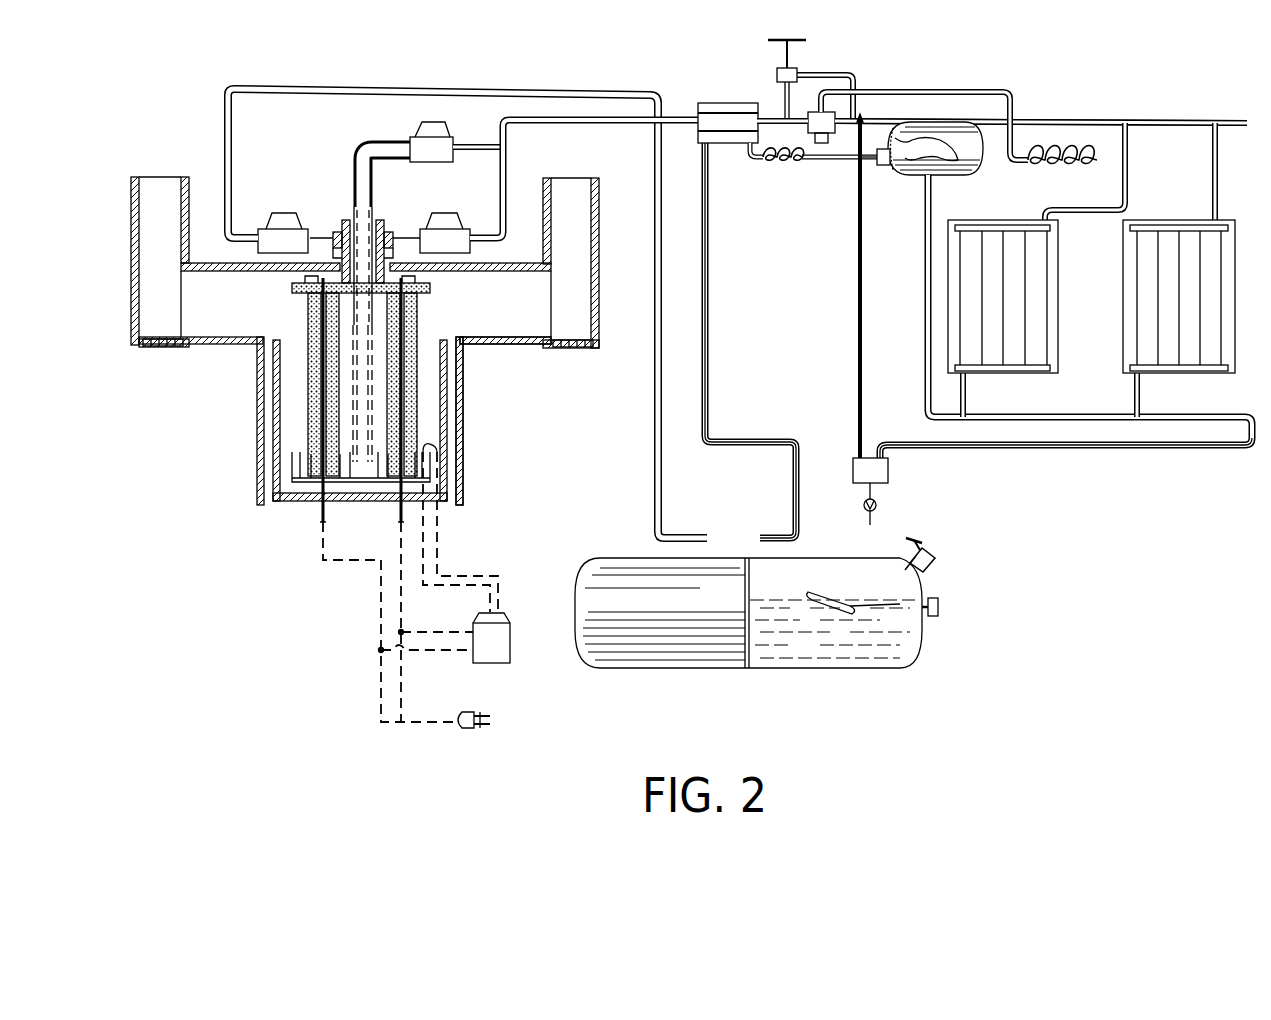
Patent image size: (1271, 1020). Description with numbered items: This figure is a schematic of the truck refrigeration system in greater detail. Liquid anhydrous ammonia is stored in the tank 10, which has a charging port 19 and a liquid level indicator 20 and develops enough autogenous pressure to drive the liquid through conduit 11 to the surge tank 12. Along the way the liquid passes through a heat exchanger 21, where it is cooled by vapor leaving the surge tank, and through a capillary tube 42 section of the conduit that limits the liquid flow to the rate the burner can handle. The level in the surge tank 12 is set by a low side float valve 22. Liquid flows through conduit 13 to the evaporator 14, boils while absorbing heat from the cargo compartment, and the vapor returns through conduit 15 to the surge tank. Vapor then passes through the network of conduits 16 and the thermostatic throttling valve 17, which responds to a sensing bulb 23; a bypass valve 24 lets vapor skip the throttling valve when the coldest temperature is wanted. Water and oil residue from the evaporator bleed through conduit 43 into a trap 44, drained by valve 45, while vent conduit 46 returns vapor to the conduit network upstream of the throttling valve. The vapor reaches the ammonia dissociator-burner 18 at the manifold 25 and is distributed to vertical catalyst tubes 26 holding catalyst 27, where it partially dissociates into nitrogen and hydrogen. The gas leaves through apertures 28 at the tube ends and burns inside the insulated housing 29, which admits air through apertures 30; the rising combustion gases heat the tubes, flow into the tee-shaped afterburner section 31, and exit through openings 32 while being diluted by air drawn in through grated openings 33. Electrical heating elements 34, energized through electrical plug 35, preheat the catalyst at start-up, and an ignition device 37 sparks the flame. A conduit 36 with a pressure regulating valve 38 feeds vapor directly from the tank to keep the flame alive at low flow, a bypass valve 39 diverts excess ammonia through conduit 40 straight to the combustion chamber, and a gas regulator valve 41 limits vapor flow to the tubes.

The tank 10 is at (775, 667).
The conduit 11 is at (793, 492).
The surge tank 12 is at (942, 132).
The conduit 13 is at (927, 272).
The evaporator 14 is at (1120, 306).
The conduit 15 is at (1160, 120).
The network of conduits 16 is at (678, 115).
The thermostatic throttling valve 17 is at (817, 110).
The ammonia dissociator-burner 18 is at (245, 492).
The charging port 19 is at (938, 565).
The liquid level indicator 20 is at (942, 612).
The heat exchanger 21 is at (727, 102).
The low side float valve 22 is at (886, 166).
The sensing bulb 23 is at (1056, 146).
The bypass valve 24 is at (784, 44).
The manifold 25 is at (293, 289).
The conduits (catalyst tubes) 26 is at (308, 319).
The catalyst 27 is at (418, 314).
The apertures 28 is at (300, 460).
The insulated housing 29 is at (462, 386).
The apertures 30 is at (275, 365).
The afterburner section 31 is at (490, 341).
The openings 32 is at (160, 183).
The grated openings 33 is at (150, 348).
The electrical heating elements 34 is at (399, 513).
The electrical plug 35 is at (496, 726).
The conduit 36 is at (231, 145).
The ignition device 37 is at (505, 662).
The pressure regulating valve 38 is at (287, 213).
The bypass valve 39 is at (430, 128).
The conduit 40 is at (373, 178).
The gas regulator valve 41 is at (445, 220).
The capillary tube 42 is at (776, 166).
The conduit 43 is at (1102, 449).
The trap 44 is at (890, 470).
The valve 45 is at (877, 504).
The vent conduit 46 is at (858, 340).